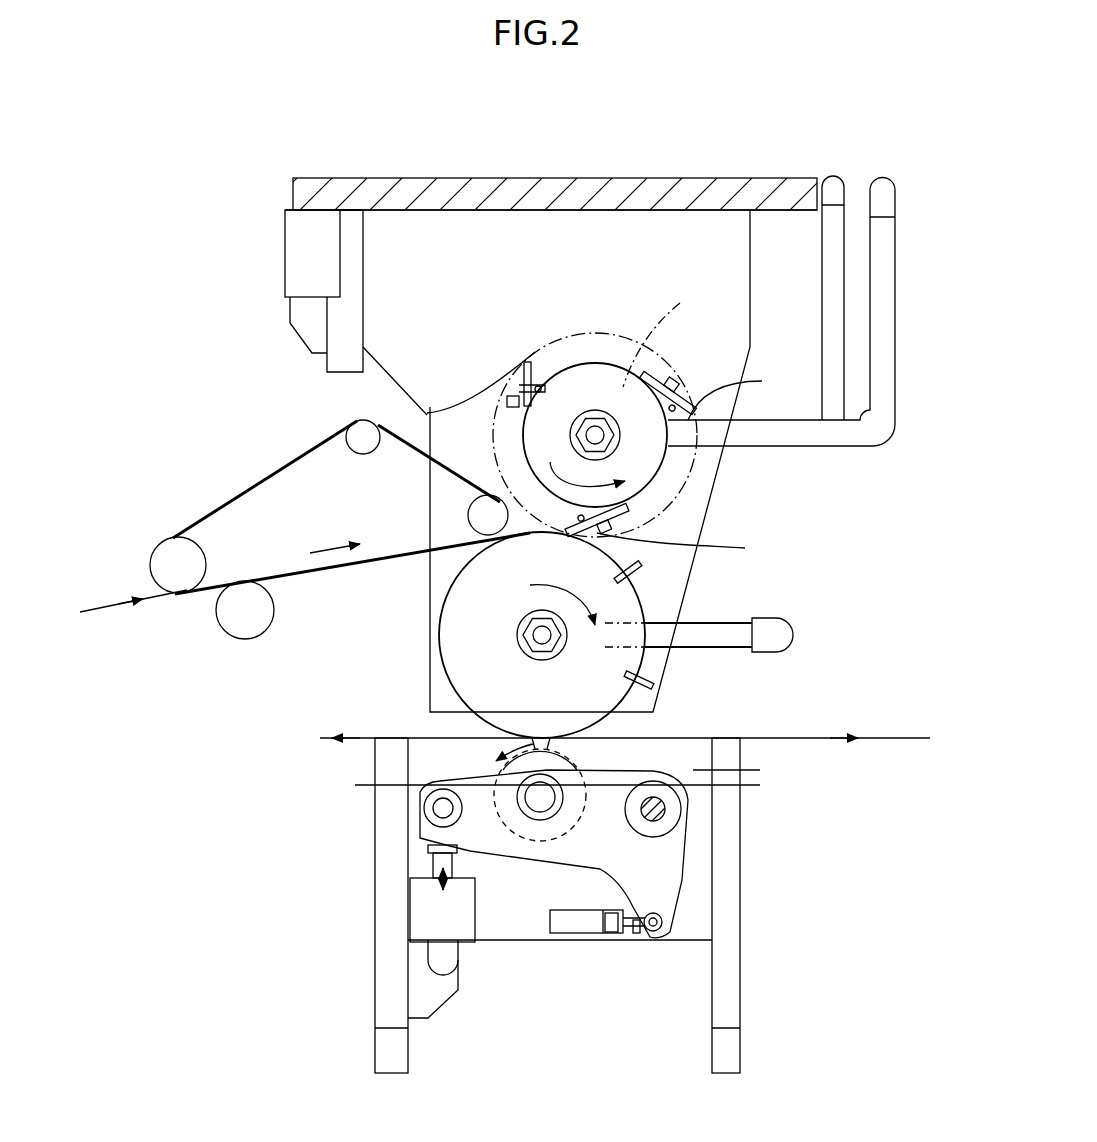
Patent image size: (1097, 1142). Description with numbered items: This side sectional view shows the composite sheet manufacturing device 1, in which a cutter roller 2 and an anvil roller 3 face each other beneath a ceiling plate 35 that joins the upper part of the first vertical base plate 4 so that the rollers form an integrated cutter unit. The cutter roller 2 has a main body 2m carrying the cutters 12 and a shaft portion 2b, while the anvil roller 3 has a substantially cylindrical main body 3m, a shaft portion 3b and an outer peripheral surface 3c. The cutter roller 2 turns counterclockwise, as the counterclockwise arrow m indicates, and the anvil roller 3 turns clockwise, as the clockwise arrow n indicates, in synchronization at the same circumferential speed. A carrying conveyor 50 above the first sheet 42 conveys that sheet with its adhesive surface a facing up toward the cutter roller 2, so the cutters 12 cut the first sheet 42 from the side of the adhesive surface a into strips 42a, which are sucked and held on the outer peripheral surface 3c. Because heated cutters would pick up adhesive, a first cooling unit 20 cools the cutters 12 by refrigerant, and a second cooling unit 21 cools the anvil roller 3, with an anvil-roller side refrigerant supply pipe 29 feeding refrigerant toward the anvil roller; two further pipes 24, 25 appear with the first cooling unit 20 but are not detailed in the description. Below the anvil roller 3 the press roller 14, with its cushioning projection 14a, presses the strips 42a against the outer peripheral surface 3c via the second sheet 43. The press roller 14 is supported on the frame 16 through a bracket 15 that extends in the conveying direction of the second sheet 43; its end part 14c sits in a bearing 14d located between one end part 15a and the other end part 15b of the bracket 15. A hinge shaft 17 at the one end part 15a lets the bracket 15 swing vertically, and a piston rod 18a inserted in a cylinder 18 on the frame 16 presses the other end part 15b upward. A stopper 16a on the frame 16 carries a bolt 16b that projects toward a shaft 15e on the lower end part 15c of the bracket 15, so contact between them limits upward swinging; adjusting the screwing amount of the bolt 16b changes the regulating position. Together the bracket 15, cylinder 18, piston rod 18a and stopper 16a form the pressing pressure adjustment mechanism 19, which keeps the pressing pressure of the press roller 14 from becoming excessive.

The composite sheet manufacturing device 1 is at (636, 168).
The cutter roller 2 is at (668, 437).
The shaft portion 2b is at (593, 427).
The main body 2m is at (661, 331).
The anvil roller 3 is at (470, 688).
The shaft portion 3b is at (525, 632).
The main body 3m is at (480, 660).
The outer peripheral surface 3c is at (648, 598).
The first vertical base plate 4 is at (707, 513).
The cutter 12 is at (427, 413).
The press roller 14 is at (580, 760).
The cushioning projection 14a is at (500, 748).
The end part 14c is at (545, 800).
The bearing 14d is at (560, 817).
The bracket 15 is at (500, 838).
The one end part 15a is at (660, 771).
The other end part 15b is at (422, 812).
The lower end part 15c is at (655, 890).
The shaft 15e is at (653, 932).
The frame 16 is at (733, 975).
The stopper 16a is at (587, 920).
The bolt 16b is at (632, 927).
The hinge shaft 17 is at (667, 808).
The cylinder 18 is at (455, 915).
The piston rod 18a is at (421, 1018).
The pressing pressure adjustment mechanism 19 is at (690, 775).
The first cooling unit 20 is at (843, 452).
The second cooling unit 21 is at (776, 614).
The pipe 24 is at (884, 178).
The pipe 25 is at (834, 176).
The anvil-roller side refrigerant supply pipe 29 is at (785, 635).
The ceiling plate 35 is at (520, 192).
The first sheet 42 is at (98, 618).
The strip 42a is at (645, 676).
The second sheet 43 is at (903, 738).
The carrying conveyor 50 is at (273, 480).
The adhesive surface a is at (118, 603).
The counterclockwise arrow m is at (548, 493).
The clockwise arrow n is at (547, 585).